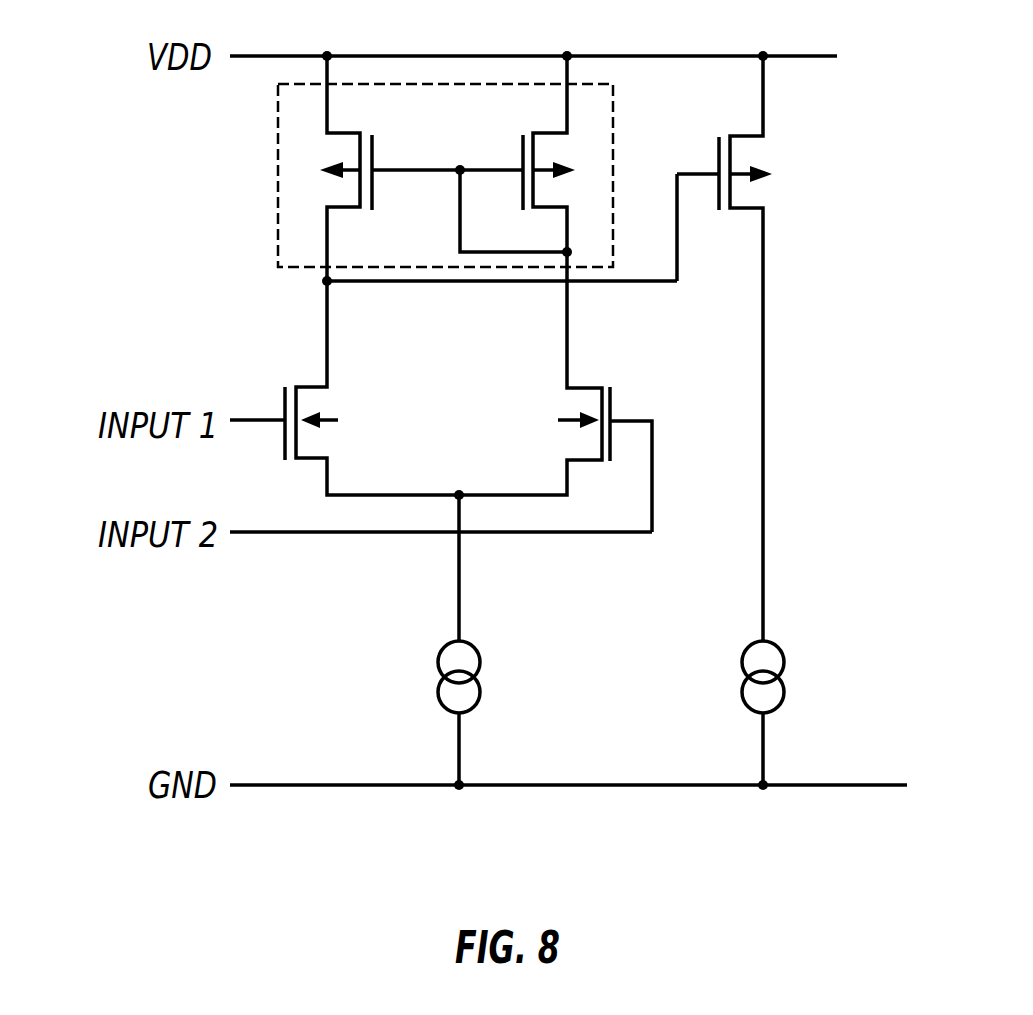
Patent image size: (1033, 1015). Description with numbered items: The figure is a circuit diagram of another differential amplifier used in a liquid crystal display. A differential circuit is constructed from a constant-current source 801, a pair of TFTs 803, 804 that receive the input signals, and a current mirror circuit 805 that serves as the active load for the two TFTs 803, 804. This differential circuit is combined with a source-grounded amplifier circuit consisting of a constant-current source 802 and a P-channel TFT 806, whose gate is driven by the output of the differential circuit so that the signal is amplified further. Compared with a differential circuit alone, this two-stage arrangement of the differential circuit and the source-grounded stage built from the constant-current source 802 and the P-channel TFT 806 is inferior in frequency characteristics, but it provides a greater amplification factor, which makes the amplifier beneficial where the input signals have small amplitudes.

The constant-current source 801 is at (468, 643).
The constant-current source 802 is at (775, 643).
The TFT 803 is at (335, 400).
The TFT 804 is at (638, 397).
The current mirror circuit 805 is at (410, 100).
The P-channel TFT 806 is at (770, 148).